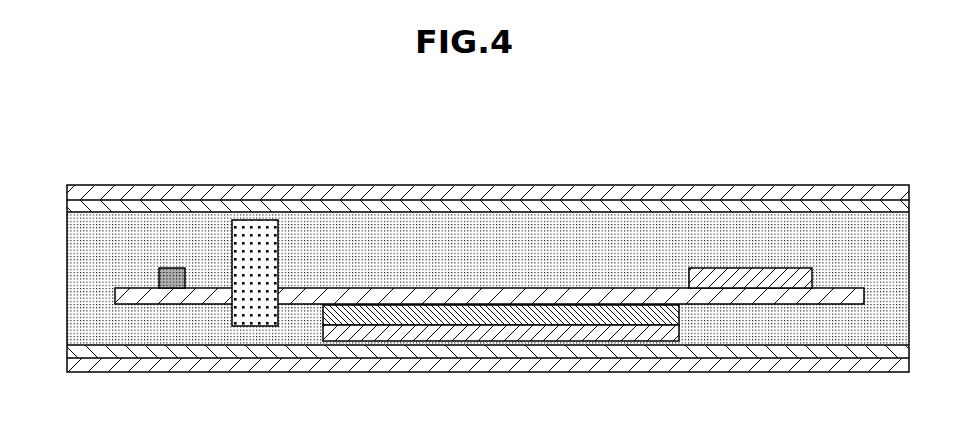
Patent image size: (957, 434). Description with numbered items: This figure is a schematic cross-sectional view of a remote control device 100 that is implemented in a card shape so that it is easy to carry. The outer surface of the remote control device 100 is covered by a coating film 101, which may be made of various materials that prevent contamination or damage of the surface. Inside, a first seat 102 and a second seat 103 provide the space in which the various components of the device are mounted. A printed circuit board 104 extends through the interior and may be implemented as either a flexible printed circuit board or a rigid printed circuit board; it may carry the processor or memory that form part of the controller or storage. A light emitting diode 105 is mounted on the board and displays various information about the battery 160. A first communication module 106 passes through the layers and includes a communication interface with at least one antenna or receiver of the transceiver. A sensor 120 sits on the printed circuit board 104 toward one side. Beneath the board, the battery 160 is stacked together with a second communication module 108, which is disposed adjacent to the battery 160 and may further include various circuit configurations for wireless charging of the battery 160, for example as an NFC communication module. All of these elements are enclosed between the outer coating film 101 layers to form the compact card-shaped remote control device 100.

The remote control device 100 is at (87, 106).
The coating film 101 is at (337, 193).
The first seat 102 is at (72, 205).
The second seat 103 is at (76, 322).
The printed circuit board 104 is at (618, 298).
The light emitting diode 105 is at (172, 270).
The first communication module 106 is at (252, 222).
The second communication module 108 is at (535, 330).
The sensor 120 is at (748, 275).
The battery 160 is at (590, 315).